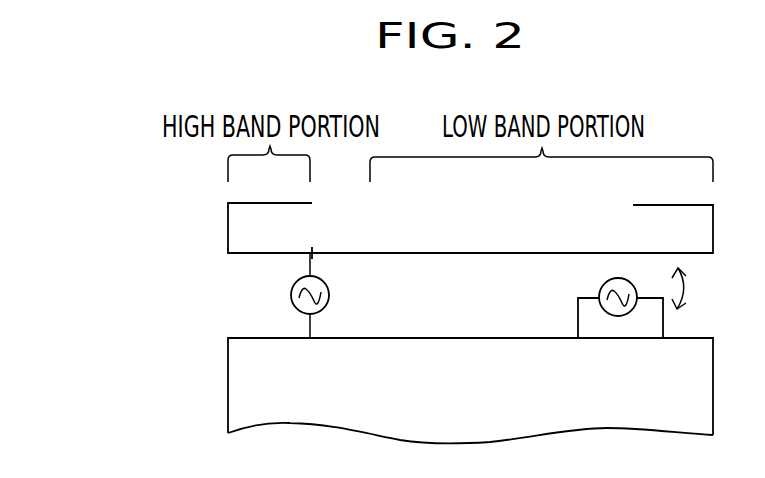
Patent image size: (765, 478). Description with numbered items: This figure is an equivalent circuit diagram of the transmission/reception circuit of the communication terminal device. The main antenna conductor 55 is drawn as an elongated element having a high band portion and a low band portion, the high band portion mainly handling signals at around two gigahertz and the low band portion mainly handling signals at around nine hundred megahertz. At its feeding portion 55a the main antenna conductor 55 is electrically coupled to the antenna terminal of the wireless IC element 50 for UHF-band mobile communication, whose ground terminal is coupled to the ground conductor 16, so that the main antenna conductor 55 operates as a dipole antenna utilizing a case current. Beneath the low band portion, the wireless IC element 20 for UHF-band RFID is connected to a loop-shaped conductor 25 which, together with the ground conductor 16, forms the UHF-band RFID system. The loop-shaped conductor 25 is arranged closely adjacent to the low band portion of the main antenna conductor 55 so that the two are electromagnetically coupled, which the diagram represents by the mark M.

The ground conductor 16 is at (258, 386).
The wireless IC element for UHF-band RFID 20 is at (600, 284).
The loop-shaped conductor 25 is at (578, 315).
The wireless IC element for UHF-band mobile communication 50 is at (291, 286).
The main antenna conductor 55 is at (498, 253).
The feeding portion 55a is at (312, 253).
The mark M (electromagnetic coupling) M is at (696, 288).